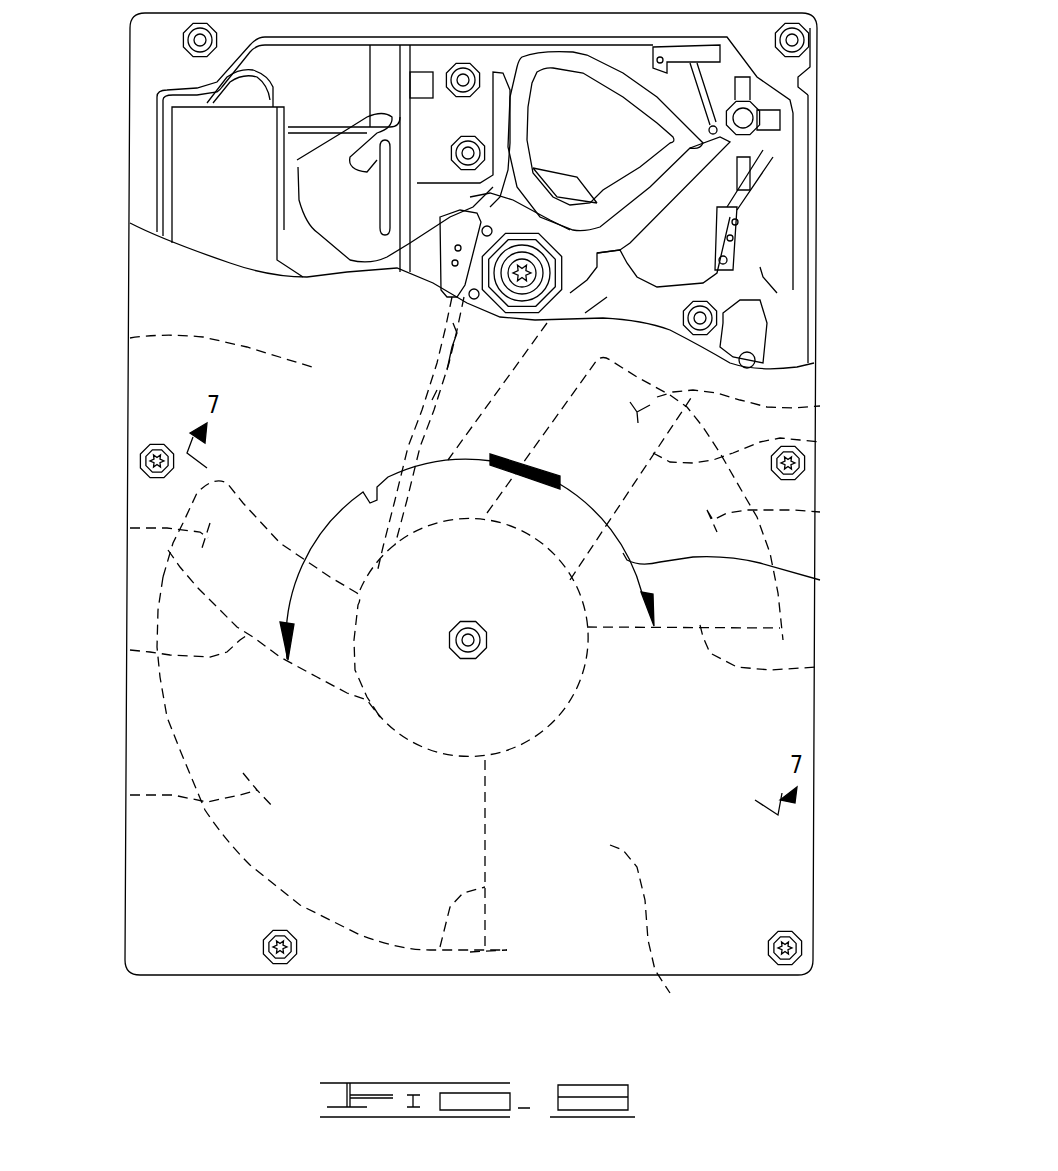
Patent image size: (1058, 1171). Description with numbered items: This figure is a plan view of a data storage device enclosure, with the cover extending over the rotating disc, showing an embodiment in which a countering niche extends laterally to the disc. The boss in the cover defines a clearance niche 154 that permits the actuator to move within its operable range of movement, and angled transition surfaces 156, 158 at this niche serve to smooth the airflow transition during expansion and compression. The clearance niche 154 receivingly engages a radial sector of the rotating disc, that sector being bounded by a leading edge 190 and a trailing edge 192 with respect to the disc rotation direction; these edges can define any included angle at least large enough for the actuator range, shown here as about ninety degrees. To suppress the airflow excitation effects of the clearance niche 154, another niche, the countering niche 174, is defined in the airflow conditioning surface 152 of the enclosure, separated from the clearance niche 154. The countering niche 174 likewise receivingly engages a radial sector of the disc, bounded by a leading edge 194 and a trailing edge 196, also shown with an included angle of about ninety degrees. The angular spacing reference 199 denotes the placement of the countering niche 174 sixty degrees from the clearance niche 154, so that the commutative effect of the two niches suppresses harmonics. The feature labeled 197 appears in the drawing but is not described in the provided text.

The airflow conditioning surface 152 is at (130, 795).
The clearance niche 154 is at (128, 343).
The angled transition surface 156 is at (820, 406).
The angled transition surface 158 is at (130, 528).
The countering niche 174 is at (670, 993).
The leading edge 190 is at (820, 442).
The trailing edge 192 is at (130, 650).
The leading edge 194 is at (440, 947).
The trailing edge 196 is at (817, 667).
The direction of rotation 197 is at (363, 493).
The angular spacing reference 199 is at (820, 580).